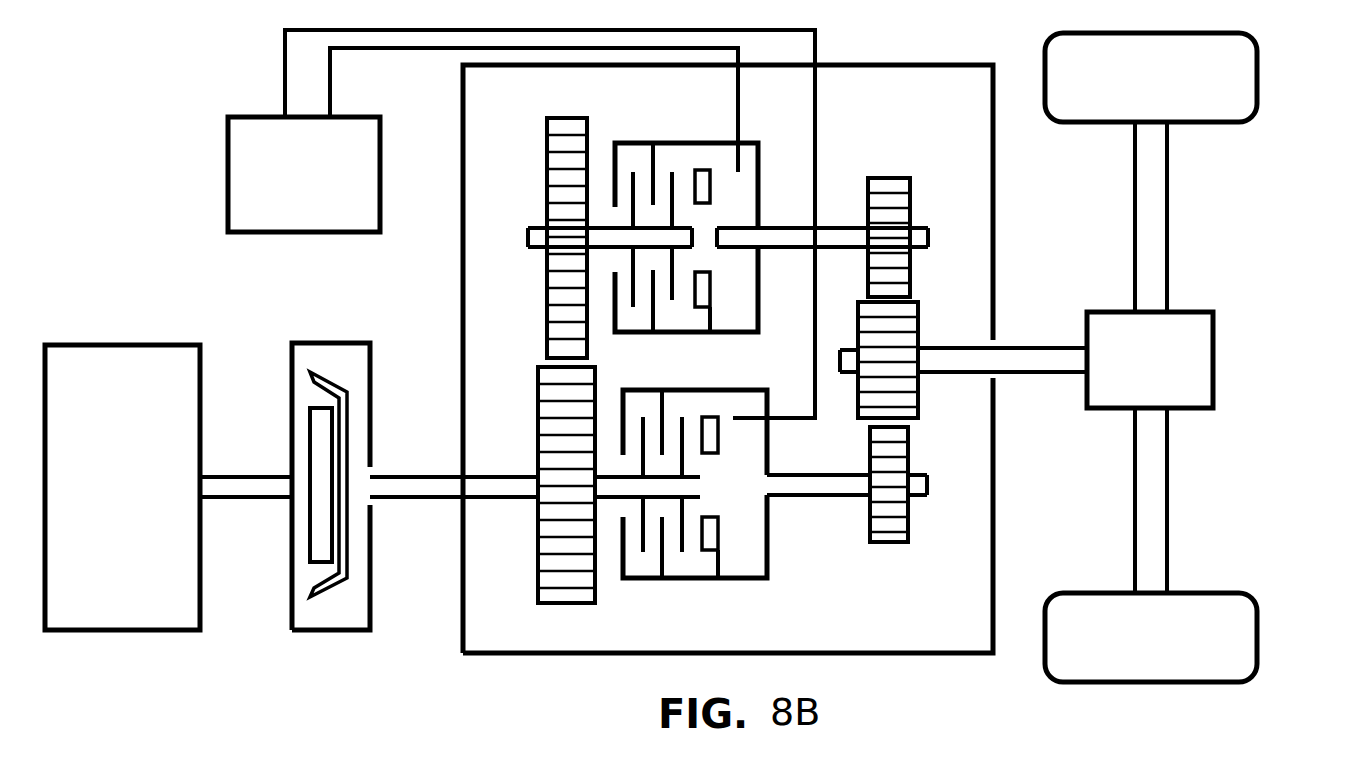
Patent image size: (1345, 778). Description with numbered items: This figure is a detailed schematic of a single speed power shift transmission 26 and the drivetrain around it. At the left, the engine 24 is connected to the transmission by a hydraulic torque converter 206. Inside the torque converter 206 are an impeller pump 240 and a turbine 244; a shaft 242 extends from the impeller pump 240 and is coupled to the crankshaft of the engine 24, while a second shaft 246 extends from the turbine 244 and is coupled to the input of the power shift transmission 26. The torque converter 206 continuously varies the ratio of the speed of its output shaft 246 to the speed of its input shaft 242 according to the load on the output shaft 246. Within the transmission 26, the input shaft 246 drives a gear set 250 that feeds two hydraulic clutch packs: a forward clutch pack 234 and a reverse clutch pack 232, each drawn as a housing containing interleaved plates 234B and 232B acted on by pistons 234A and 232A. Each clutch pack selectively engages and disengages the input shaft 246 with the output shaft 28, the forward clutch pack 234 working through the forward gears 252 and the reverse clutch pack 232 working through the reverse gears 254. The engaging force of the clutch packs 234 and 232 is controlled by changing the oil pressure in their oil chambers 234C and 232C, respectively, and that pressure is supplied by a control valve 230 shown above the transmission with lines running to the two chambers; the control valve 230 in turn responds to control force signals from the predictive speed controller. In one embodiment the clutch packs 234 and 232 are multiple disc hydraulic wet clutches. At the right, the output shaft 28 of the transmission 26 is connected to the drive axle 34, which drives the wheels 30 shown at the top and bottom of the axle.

The engine 24 is at (122, 342).
The shaft 242 is at (248, 500).
The hydraulic torque converter 206 is at (332, 343).
The impeller pump 240 is at (300, 438).
The turbine 244 is at (348, 440).
The shaft 246 is at (418, 500).
The power shift transmission 26 is at (463, 605).
The control valve 230 is at (228, 176).
The gear set 250 is at (547, 308).
The forward clutch pack 234 is at (706, 227).
The first clutch piston 234A is at (708, 162).
The first clutch plates 234B is at (648, 152).
The oil chamber 234C is at (745, 152).
The reverse clutch pack 232 is at (714, 484).
The second clutch piston 232A is at (712, 568).
The second clutch plates 232B is at (656, 573).
The oil chamber 232C is at (750, 398).
The forward gears 252 is at (912, 176).
The reverse gears 254 is at (888, 545).
The output shaft 28 is at (1042, 348).
The drive axle 34 is at (1213, 358).
The wheels 30 is at (1257, 75).